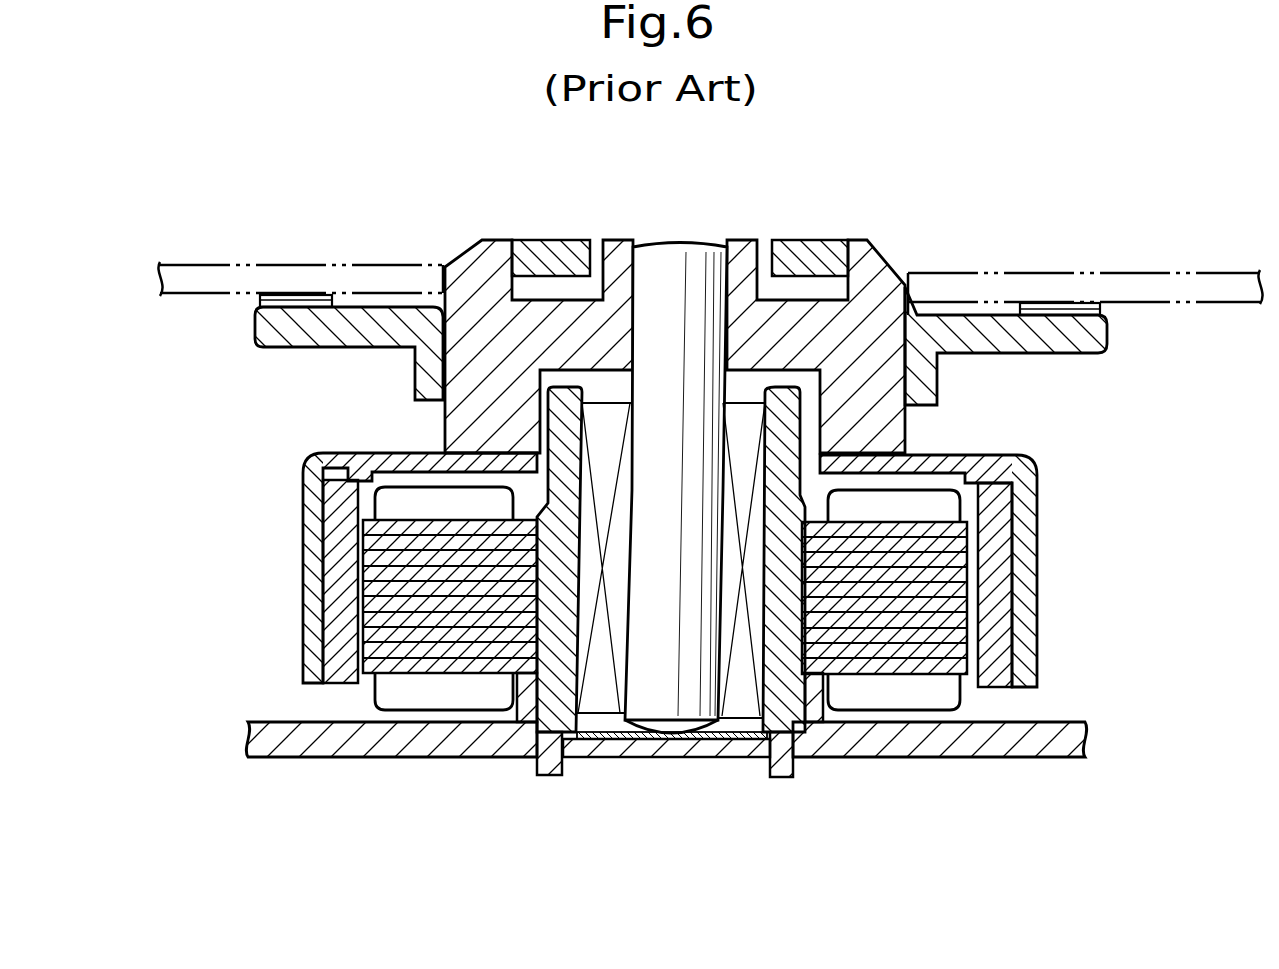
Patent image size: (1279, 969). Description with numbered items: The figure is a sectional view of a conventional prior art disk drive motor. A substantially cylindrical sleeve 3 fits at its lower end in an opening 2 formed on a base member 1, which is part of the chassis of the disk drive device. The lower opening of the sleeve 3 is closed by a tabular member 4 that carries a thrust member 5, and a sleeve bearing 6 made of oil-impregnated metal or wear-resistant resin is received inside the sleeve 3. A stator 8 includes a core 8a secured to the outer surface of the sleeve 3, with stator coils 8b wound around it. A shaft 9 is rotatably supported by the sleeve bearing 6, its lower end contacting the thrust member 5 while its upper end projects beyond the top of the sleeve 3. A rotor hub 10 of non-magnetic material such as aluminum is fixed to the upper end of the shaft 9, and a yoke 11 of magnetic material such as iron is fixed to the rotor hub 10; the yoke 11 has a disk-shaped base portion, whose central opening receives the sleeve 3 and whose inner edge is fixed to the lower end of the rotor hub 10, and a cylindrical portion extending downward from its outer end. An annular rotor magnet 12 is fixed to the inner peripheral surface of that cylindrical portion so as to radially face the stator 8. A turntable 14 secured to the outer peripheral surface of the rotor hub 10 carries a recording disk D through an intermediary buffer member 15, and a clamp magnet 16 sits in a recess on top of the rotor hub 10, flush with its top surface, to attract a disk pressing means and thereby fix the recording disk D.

The base member 1 is at (965, 748).
The opening 2 is at (789, 745).
The sleeve 3 is at (523, 722).
The tabular member 4 is at (640, 750).
The thrust member 5 is at (707, 747).
The sleeve bearing 6 is at (597, 697).
The stator 8 is at (967, 510).
The core 8a is at (360, 553).
The stator coils 8b is at (410, 500).
The shaft 9 is at (678, 262).
The rotor hub 10 is at (468, 272).
The yoke 11 is at (1033, 573).
The annular rotor magnet 12 is at (332, 618).
The turntable 14 is at (1100, 342).
The buffer member 15 is at (283, 292).
The clamp magnet 16 is at (553, 250).
The recording disk D is at (1157, 273).